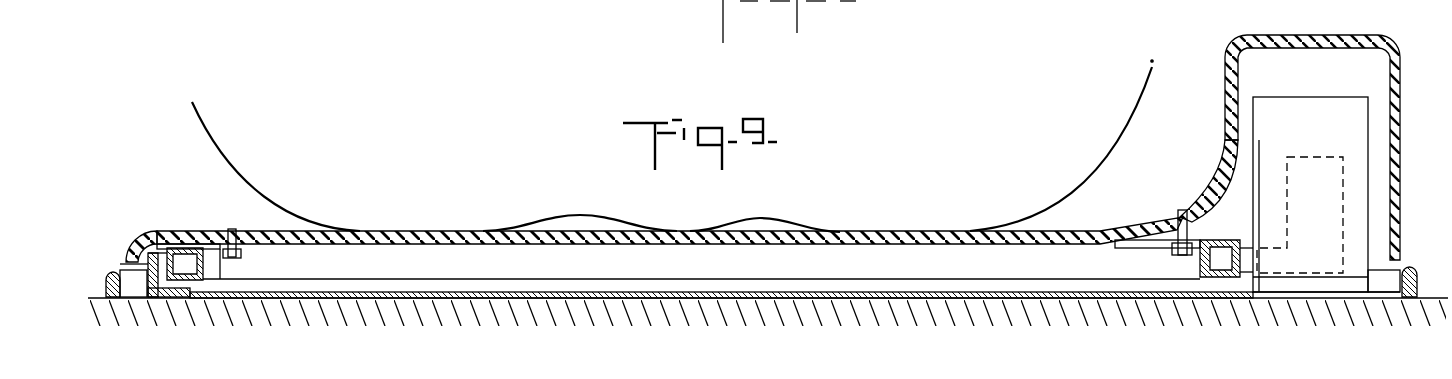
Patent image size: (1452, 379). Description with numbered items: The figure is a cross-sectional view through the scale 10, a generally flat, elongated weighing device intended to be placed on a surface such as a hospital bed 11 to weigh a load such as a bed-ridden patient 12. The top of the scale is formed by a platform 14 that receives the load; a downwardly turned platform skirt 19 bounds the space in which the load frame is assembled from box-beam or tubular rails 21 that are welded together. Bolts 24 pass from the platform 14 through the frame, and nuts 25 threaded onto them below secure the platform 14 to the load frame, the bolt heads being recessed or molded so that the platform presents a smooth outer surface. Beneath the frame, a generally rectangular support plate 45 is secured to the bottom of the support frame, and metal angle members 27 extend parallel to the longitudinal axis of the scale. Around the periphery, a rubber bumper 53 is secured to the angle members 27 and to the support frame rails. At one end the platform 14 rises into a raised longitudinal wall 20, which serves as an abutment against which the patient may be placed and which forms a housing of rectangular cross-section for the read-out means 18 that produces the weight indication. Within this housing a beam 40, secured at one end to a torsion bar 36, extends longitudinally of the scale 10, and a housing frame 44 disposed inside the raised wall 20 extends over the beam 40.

The scale 10 is at (1410, 108).
The hospital bed 11 is at (647, 317).
The bed-ridden patient 12 is at (224, 183).
The platform 14 is at (1134, 224).
The read-out means 18 is at (1353, 193).
The platform skirt 19 is at (129, 232).
The raised longitudinal wall 20 is at (1266, 40).
The rails 21 is at (205, 270).
The bolt 24 is at (232, 229).
The nut 25 is at (241, 252).
The angle members 27 is at (175, 293).
The torsion bar 36 is at (1249, 273).
The beam 40 is at (1319, 157).
The housing frame 44 is at (1304, 99).
The support plate 45 is at (538, 297).
The bumper 53 is at (106, 274).